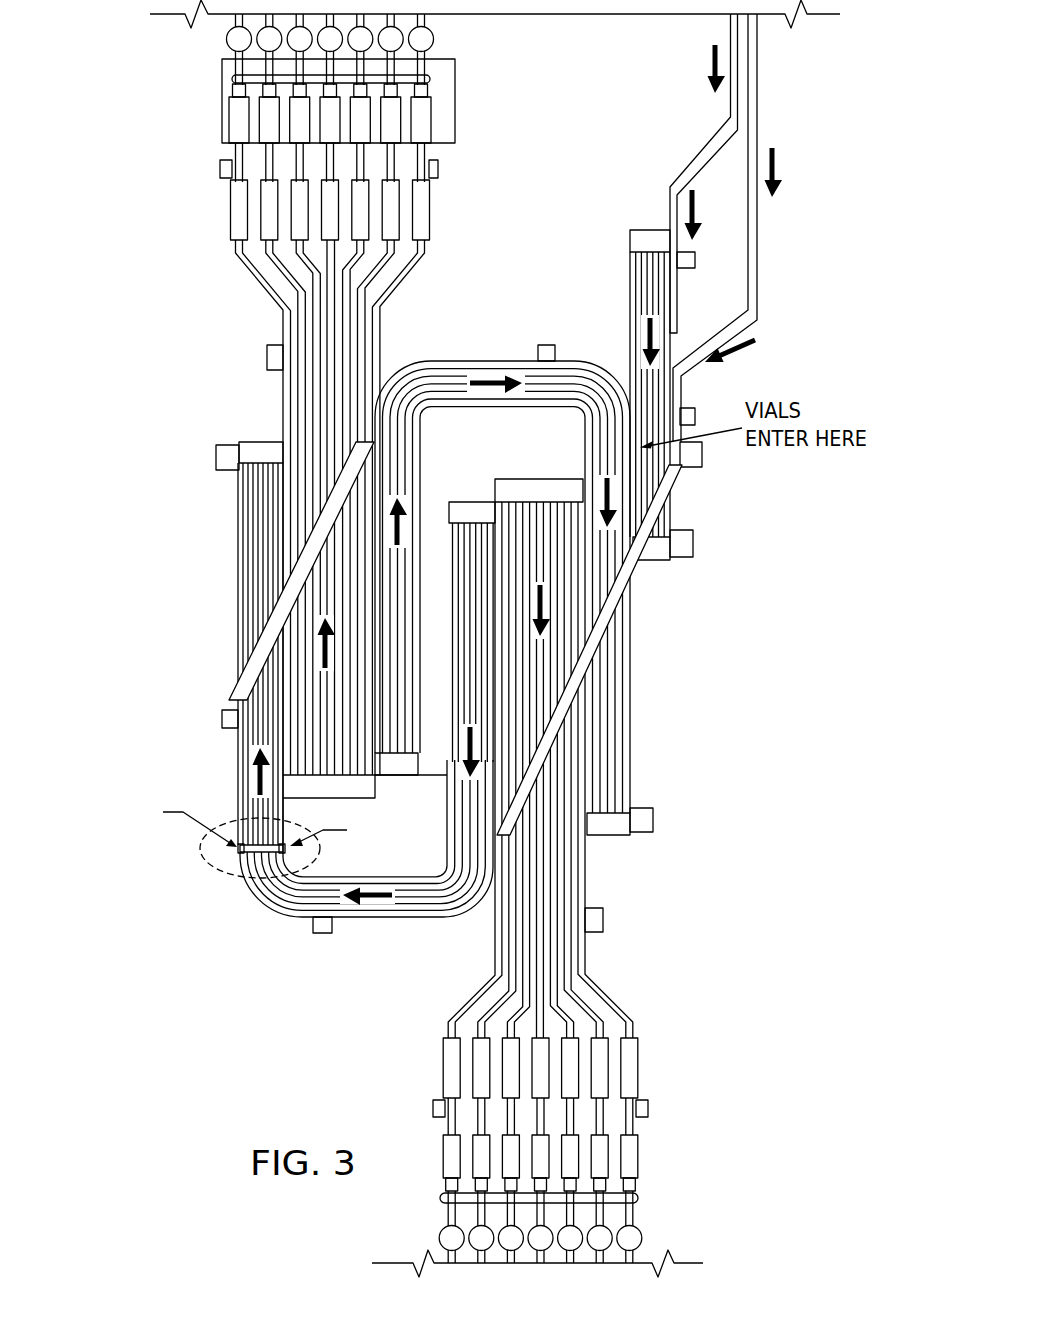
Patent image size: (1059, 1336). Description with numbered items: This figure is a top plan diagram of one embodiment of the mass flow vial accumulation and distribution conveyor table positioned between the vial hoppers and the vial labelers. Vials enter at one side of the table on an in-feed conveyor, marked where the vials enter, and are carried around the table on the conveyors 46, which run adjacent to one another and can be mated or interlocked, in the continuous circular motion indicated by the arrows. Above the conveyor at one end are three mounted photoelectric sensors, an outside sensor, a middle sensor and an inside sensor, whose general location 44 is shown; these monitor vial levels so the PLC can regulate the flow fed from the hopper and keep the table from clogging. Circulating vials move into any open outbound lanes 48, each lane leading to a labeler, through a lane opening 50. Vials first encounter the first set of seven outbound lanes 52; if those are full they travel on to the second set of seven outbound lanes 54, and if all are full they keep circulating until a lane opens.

The location of sensors 44 is at (204, 854).
The conveyors 46 is at (415, 466).
The outbound lanes 48 is at (290, 274).
The lane opening 50 is at (545, 765).
The first set of outbound lanes 52 is at (659, 1065).
The second set of outbound lanes 54 is at (213, 212).